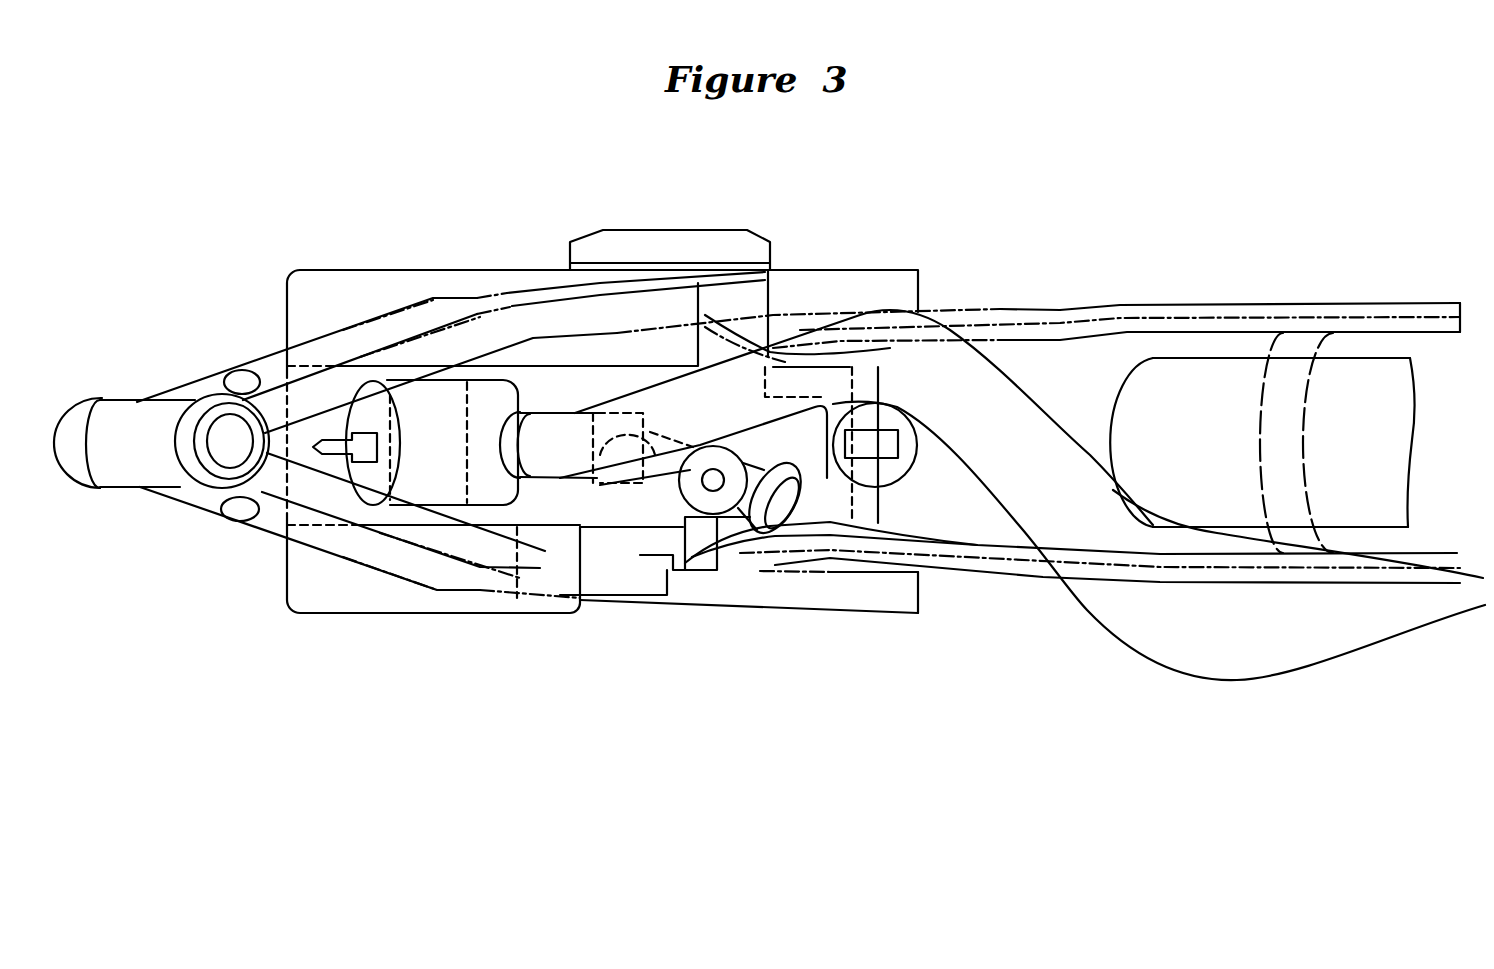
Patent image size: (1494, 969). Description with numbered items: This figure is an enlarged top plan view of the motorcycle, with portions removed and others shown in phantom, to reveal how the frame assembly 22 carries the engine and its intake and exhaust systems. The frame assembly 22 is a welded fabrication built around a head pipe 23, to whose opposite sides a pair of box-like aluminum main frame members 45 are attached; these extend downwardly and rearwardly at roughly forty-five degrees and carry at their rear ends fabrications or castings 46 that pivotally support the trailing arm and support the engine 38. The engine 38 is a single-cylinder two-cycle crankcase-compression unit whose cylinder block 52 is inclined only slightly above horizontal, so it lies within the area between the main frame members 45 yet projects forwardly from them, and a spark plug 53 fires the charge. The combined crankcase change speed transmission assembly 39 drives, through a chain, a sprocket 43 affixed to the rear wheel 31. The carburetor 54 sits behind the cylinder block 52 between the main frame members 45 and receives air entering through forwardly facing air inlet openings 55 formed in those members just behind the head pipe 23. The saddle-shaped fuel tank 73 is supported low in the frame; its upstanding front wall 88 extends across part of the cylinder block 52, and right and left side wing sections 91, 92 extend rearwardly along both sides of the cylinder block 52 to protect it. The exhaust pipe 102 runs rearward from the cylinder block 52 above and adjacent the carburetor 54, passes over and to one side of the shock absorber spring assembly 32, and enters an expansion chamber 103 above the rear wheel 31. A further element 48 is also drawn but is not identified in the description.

The frame assembly 22 is at (186, 375).
The head pipe 23 is at (132, 420).
The rear wheel 31 is at (1370, 330).
The combined shock absorber spring assembly 32 is at (910, 467).
The internal combustion engine 38 is at (614, 513).
The combined crankcase change speed transmission assembly 39 is at (740, 250).
The sprocket 43 is at (332, 458).
The main frame members 45 is at (268, 360).
The fabrications or castings 46 is at (887, 270).
The tubes 48 is at (1160, 303).
The cylinder block 52 is at (448, 417).
The spark plug 53 is at (340, 480).
The carburetor 54 is at (733, 492).
The air inlet openings 55 is at (240, 383).
The fuel tank 73 is at (436, 628).
The front wall 88 is at (270, 507).
The right side wing section 91 is at (347, 598).
The left side wing section 92 is at (488, 268).
The exhaust pipe 102 is at (710, 397).
The expansion chamber 103 is at (1260, 660).